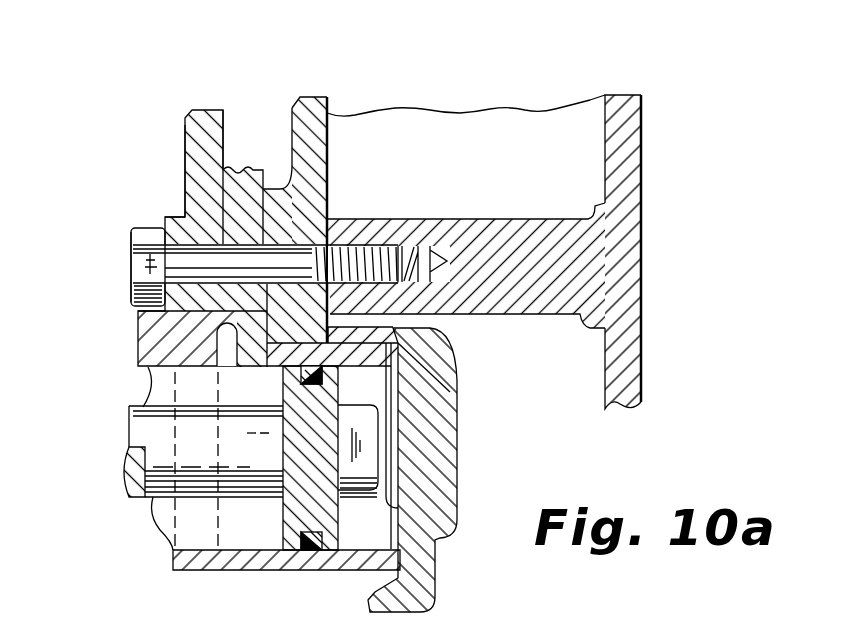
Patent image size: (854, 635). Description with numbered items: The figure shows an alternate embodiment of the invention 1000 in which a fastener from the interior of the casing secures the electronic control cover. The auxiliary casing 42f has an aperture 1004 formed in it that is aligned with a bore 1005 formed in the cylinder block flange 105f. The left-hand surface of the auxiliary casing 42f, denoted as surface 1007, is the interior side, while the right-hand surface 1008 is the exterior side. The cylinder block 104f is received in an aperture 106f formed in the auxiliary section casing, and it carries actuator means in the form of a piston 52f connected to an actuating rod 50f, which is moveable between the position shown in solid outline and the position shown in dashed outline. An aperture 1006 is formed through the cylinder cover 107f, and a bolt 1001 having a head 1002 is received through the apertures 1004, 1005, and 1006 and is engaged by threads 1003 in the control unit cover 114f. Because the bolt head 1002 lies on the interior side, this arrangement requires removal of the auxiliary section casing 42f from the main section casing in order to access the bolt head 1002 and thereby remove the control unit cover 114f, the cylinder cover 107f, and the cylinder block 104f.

The auxiliary casing 42f is at (203, 109).
The interior side surface 1007 is at (185, 147).
The bolt 1001 is at (197, 206).
The exterior side surface 1008 is at (227, 128).
The cylinder block flange 105f is at (237, 169).
The cylinder cover 107f is at (323, 96).
The embodiment of the invention 1000 is at (448, 108).
The control unit cover 114f is at (622, 94).
The threads 1003 is at (377, 231).
The bore 1005 is at (247, 283).
The aperture 1004 is at (160, 261).
The bolt head 1002 is at (133, 236).
The cylinder block 104f is at (134, 307).
The aperture 106f is at (185, 326).
The aperture 1006 is at (262, 288).
The actuating rod 50f is at (157, 510).
The piston 52f is at (273, 535).